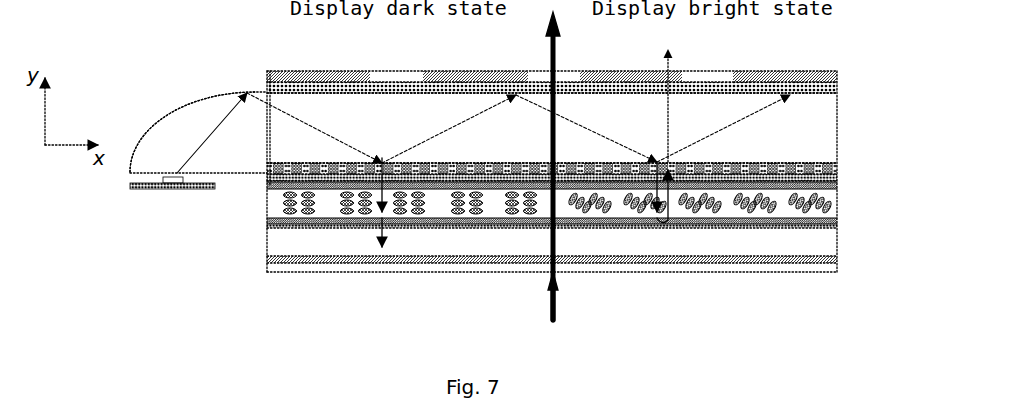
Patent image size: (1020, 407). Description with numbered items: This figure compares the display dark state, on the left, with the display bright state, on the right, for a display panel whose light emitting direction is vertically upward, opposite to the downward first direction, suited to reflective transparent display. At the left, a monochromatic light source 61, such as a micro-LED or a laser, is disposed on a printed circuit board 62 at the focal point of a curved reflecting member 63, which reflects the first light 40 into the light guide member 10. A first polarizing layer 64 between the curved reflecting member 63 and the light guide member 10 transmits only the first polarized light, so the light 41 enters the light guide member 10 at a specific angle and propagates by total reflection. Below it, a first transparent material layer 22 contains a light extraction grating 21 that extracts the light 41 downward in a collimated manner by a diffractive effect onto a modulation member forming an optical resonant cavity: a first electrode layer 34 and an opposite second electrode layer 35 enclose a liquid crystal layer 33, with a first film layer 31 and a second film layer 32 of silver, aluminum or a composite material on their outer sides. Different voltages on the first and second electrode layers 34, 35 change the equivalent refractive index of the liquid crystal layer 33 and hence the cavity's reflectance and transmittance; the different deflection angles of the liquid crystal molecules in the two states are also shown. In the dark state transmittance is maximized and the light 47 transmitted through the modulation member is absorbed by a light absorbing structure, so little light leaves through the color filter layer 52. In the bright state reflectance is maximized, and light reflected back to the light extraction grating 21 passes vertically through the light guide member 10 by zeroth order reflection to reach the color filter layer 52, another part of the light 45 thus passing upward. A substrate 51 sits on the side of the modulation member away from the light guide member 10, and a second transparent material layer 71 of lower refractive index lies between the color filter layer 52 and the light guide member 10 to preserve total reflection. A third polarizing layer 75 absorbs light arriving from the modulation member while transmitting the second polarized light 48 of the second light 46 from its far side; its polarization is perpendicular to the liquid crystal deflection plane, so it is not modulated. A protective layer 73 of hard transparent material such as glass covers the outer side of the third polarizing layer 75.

The light guide member 10 is at (838, 130).
The light extraction grating 21 is at (838, 166).
The first transparent material layer 22 is at (838, 178).
The first film layer 31 is at (267, 185).
The second film layer 32 is at (267, 226).
The liquid crystal layer 33 is at (267, 204).
The first electrode layer 34 is at (838, 186).
The second electrode layer 35 is at (838, 220).
The first light 40 is at (182, 150).
The light 41 is at (410, 138).
The light 45 is at (668, 58).
The second light 46 is at (556, 288).
The light transmitted through the modulation member 47 is at (390, 240).
The second polarized light 48 is at (550, 52).
The substrate 51 is at (267, 243).
The color filter layer 52 is at (838, 73).
The monochromatic light source 61 is at (172, 188).
The printed circuit board 62 is at (142, 188).
The curved reflecting member 63 is at (172, 117).
The first polarizing layer 64 is at (263, 92).
The second transparent material layer 71 is at (838, 88).
The protective layer 73 is at (837, 268).
The third polarizing layer 75 is at (837, 258).